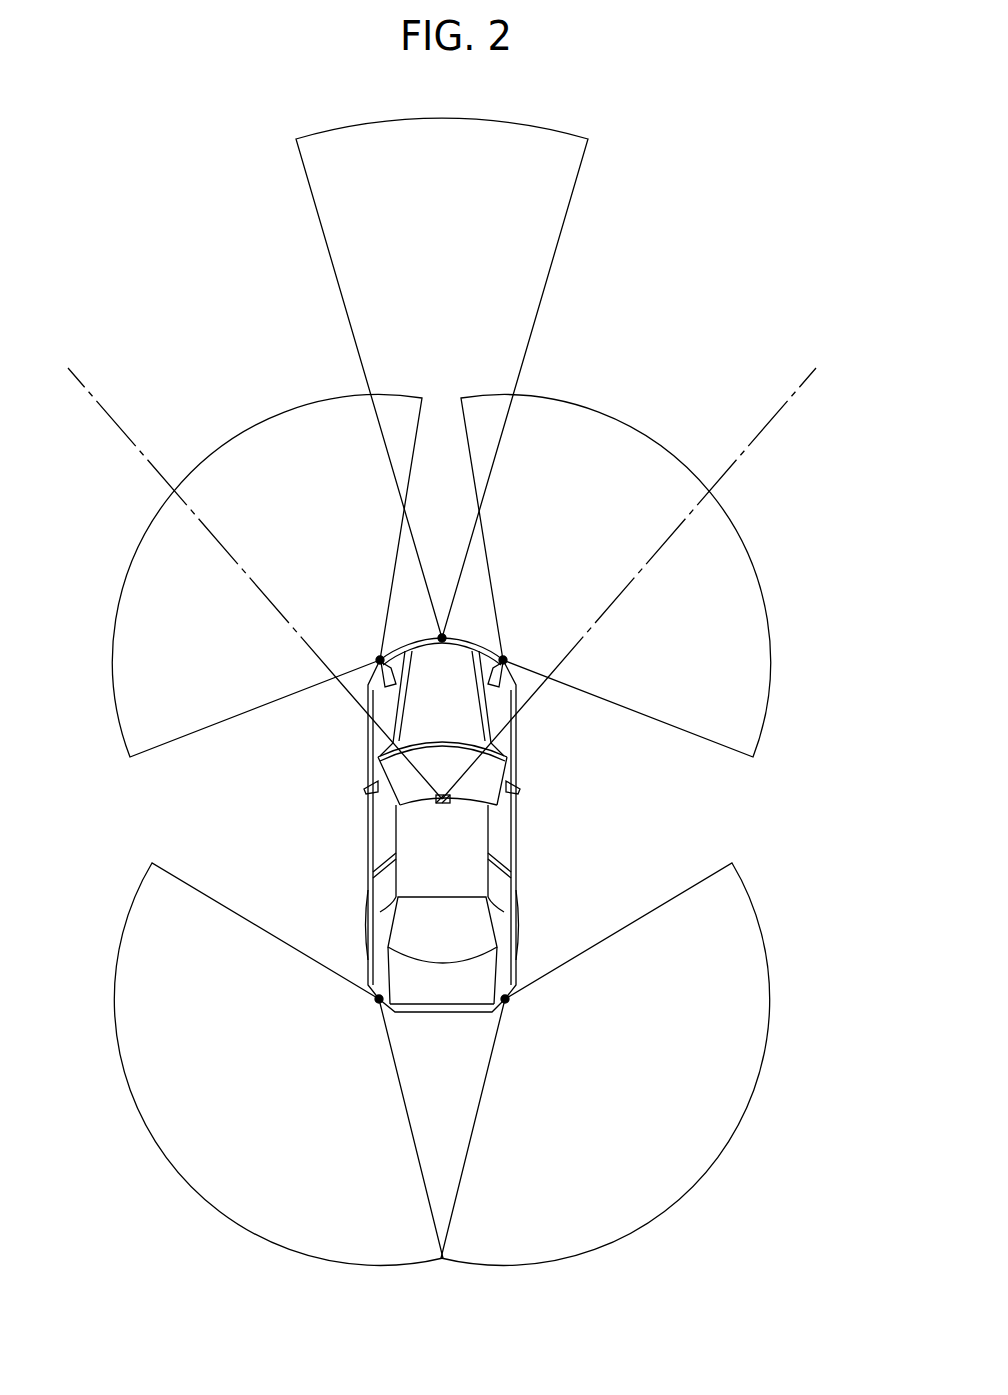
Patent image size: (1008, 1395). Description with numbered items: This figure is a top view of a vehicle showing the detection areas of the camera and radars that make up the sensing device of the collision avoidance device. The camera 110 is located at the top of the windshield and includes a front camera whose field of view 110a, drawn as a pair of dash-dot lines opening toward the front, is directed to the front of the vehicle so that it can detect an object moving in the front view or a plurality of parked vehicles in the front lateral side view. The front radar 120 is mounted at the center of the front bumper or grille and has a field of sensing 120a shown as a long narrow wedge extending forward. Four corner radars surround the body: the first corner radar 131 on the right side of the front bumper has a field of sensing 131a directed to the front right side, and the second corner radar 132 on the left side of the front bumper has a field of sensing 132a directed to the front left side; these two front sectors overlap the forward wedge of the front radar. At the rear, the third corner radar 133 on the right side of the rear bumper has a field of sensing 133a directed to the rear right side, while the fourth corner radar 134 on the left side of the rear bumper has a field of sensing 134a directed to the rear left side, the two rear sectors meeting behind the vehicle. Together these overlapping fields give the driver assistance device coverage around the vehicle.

The camera 110 is at (449, 799).
The field of view 110a is at (773, 418).
The front radar 120 is at (445, 636).
The field of sensing 120a is at (530, 257).
The first corner radar 131 is at (506, 658).
The field of sensing 131a is at (643, 450).
The second corner radar 132 is at (377, 658).
The field of sensing 132a is at (240, 450).
The third corner radar 133 is at (509, 1002).
The field of sensing 133a is at (717, 1140).
The fourth corner radar 134 is at (375, 1002).
The field of sensing 134a is at (167, 1140).